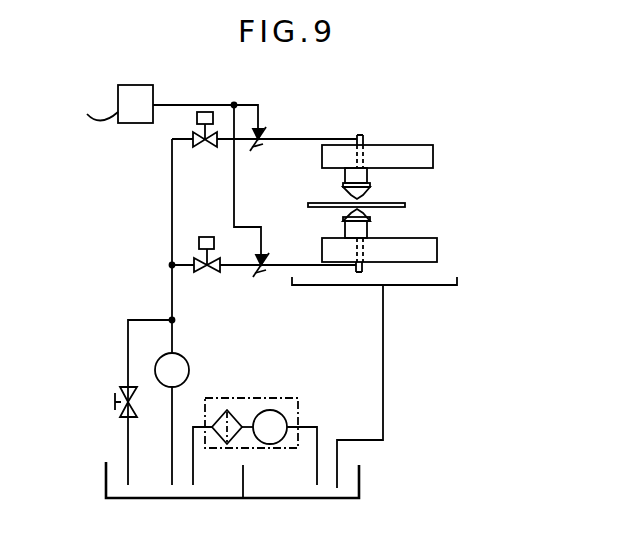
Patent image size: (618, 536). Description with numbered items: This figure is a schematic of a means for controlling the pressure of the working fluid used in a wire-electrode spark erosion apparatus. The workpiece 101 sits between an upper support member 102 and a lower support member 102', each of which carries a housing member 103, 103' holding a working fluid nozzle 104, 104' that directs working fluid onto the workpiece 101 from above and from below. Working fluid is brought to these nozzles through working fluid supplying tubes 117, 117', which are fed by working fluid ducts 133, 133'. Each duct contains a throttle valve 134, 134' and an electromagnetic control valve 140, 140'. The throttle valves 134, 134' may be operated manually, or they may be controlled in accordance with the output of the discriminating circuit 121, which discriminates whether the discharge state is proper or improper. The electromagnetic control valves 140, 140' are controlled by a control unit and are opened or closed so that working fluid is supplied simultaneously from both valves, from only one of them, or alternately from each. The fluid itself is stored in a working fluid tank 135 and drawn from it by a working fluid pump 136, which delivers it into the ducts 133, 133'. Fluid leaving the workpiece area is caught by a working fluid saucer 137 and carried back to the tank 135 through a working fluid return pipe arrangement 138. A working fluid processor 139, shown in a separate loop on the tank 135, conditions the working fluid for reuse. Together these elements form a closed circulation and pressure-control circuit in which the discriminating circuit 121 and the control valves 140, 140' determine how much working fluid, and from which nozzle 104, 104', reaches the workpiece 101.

The discriminating circuit 121 is at (128, 85).
The electromagnetic control valve 140 is at (205, 150).
The electromagnetic control valve 140' is at (210, 274).
The working fluid duct 133 is at (264, 123).
The working fluid duct 133' is at (264, 246).
The throttle valve 134 is at (274, 120).
The throttle valve 134' is at (267, 291).
The working fluid supplying tube 117 is at (378, 126).
The working fluid supplying tube 117' is at (343, 294).
The upper support member 102 is at (390, 145).
The lower support member 102' is at (407, 249).
The housing member 103 is at (321, 181).
The housing member 103' is at (313, 220).
The working fluid nozzle 104 is at (390, 187).
The working fluid nozzle 104' is at (394, 221).
The workpiece 101 is at (405, 205).
The working fluid saucer 137 is at (458, 282).
The working fluid return pipe arrangement 138 is at (385, 400).
The working fluid pump 136 is at (190, 368).
The working fluid processor 139 is at (288, 398).
The working fluid tank 135 is at (362, 486).